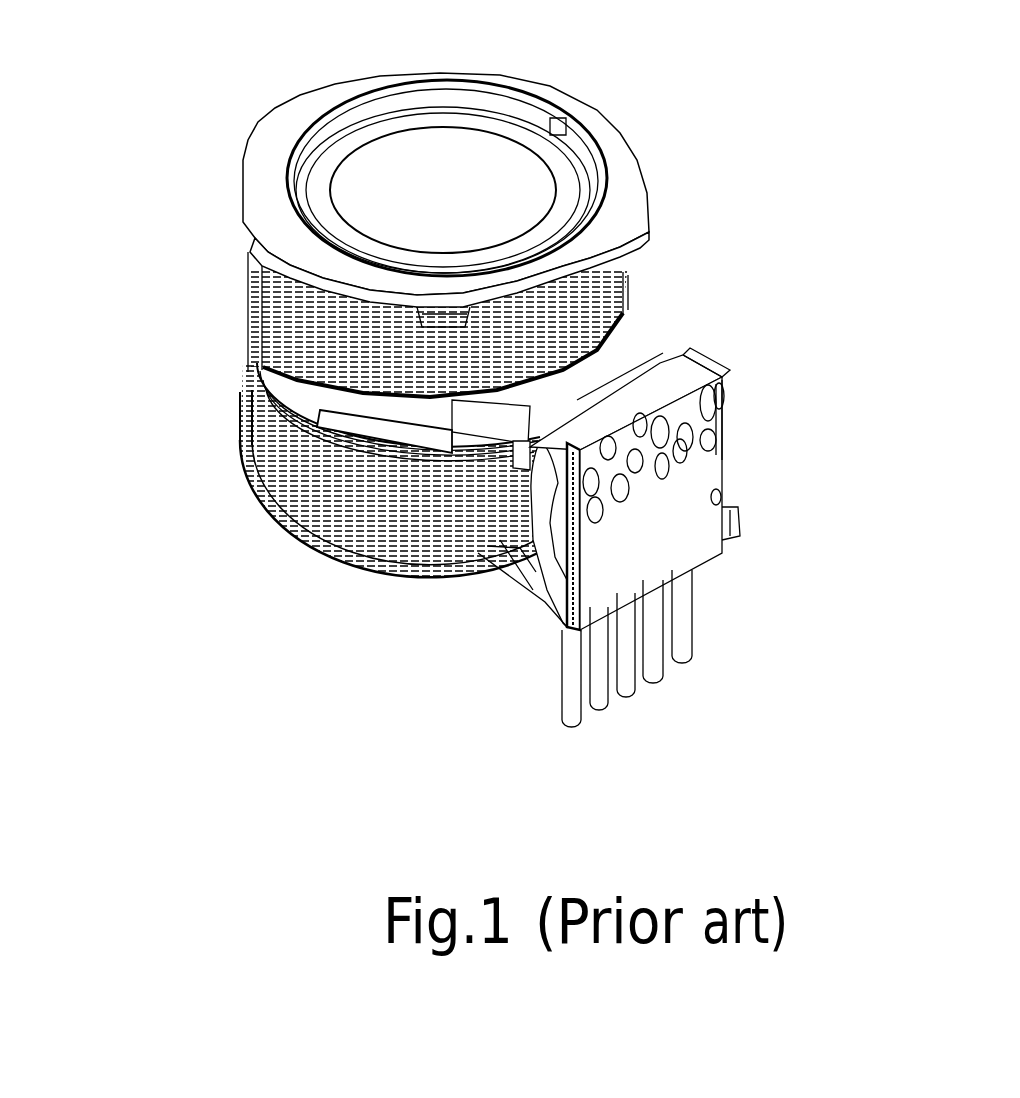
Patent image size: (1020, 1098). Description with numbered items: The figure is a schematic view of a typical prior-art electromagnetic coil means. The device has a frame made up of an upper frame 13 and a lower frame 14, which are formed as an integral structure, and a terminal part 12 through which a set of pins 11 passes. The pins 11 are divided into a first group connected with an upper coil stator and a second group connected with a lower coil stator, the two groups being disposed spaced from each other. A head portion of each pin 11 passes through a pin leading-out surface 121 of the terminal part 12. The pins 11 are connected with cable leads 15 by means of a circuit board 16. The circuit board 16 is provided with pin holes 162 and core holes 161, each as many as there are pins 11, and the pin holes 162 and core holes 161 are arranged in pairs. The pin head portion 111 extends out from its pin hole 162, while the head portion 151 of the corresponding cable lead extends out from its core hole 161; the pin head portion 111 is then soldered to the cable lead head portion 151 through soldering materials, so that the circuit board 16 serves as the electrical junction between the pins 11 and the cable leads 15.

The pins 11 is at (700, 367).
The terminal part 12 is at (636, 330).
The upper frame 13 is at (277, 173).
The lower frame 14 is at (243, 443).
The cable leads 15 is at (692, 613).
The circuit board 16 is at (690, 517).
The pin head portion 111 is at (730, 397).
The pin leading-out surface 121 is at (543, 483).
The cable lead head portion 151 is at (722, 458).
The core holes 161 is at (722, 473).
The pin holes 162 is at (726, 372).